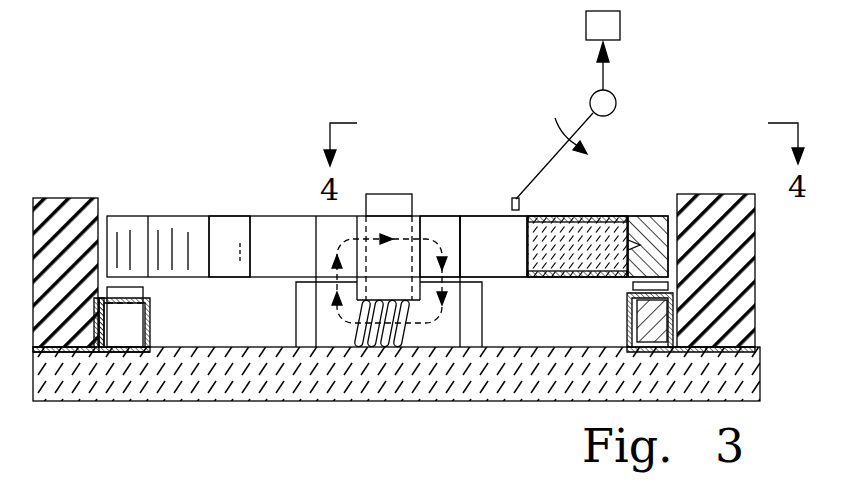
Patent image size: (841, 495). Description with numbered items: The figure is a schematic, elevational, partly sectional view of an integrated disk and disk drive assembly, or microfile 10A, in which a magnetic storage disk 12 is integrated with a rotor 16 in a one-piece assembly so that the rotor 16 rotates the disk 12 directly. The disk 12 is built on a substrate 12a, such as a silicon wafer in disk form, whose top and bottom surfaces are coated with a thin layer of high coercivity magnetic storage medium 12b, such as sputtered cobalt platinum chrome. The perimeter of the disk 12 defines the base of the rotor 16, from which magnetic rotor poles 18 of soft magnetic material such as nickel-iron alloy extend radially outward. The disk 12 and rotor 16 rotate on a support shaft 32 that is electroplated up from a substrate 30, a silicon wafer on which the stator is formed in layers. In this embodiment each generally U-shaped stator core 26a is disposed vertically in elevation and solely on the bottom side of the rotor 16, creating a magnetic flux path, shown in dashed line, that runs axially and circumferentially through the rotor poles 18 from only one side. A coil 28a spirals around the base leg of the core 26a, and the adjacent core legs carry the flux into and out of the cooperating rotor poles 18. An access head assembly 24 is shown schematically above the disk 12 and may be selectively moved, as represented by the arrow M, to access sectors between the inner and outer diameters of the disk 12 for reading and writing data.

The integrated microfile 10A is at (168, 150).
The magnetic storage disk 12 is at (285, 200).
The substrate 12a is at (550, 243).
The magnetic storage medium 12b is at (572, 213).
The rotor 16 is at (628, 213).
The magnetic rotor poles 18 is at (235, 217).
The access head assembly 24 is at (630, 104).
The U-shaped stator core 26a is at (313, 322).
The coil 28a is at (150, 322).
The substrate 30 is at (278, 385).
The support shaft 32 is at (397, 193).
The arrow M is at (558, 133).